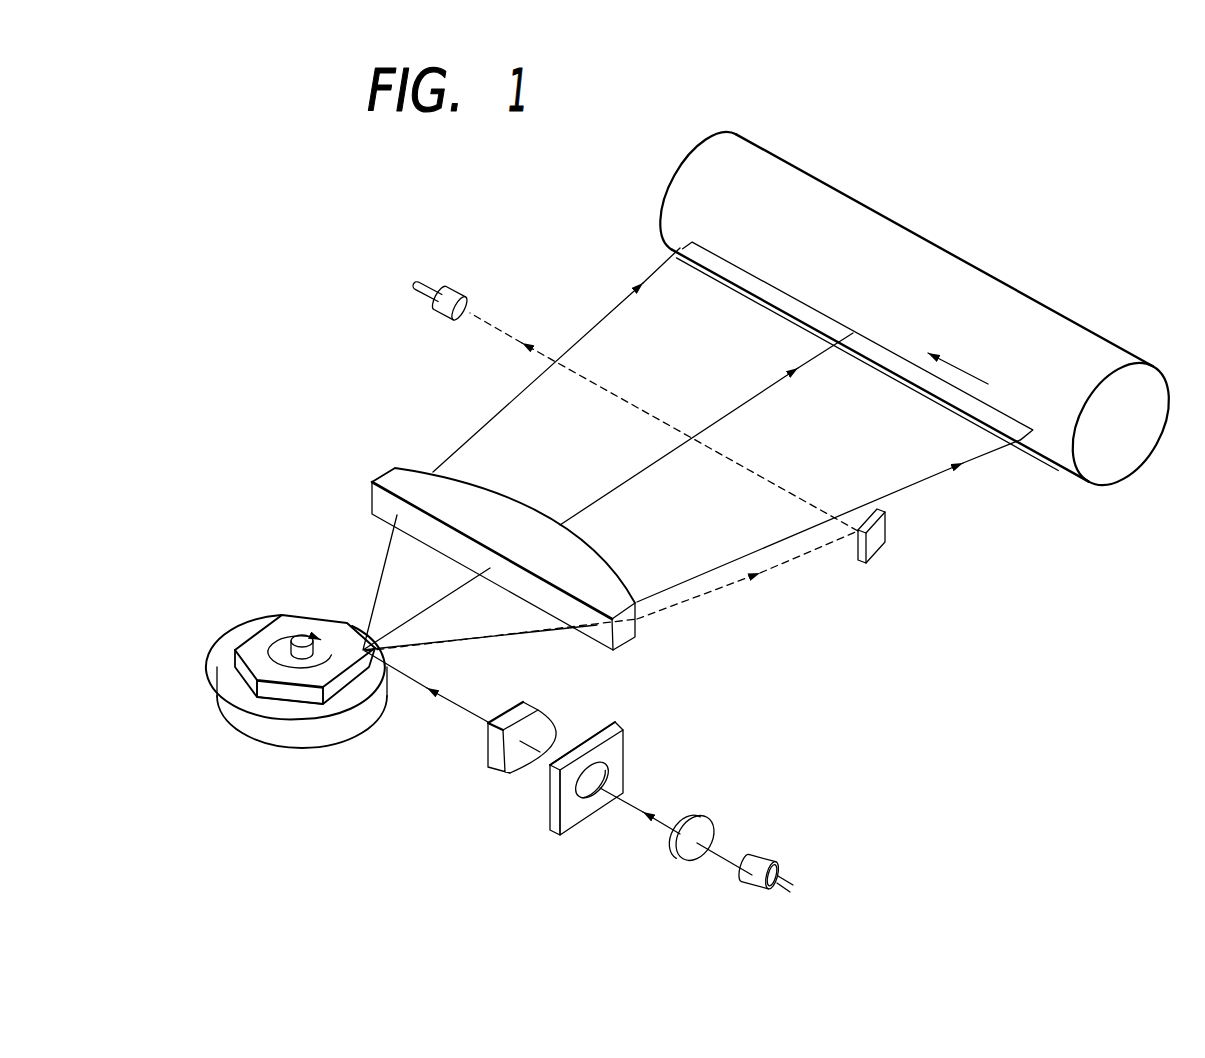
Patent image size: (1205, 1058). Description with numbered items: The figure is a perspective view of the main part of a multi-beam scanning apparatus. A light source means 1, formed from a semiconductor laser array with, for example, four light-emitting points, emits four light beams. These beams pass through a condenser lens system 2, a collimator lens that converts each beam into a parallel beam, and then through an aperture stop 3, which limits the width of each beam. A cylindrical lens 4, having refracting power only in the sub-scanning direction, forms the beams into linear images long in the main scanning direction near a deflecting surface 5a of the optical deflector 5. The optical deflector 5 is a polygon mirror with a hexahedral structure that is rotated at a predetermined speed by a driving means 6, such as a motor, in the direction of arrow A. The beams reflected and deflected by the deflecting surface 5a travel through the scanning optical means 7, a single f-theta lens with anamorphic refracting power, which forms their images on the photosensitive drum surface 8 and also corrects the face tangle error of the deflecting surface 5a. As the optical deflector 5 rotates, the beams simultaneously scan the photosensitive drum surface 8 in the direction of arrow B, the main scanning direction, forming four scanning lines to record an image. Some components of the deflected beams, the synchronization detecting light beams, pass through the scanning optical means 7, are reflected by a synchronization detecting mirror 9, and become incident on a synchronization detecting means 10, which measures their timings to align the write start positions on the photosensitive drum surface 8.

The light source means 1 is at (747, 881).
The condenser lens system 2 is at (687, 841).
The aperture stop 3 is at (563, 788).
The cylindrical lens 4 is at (490, 750).
The optical deflector 5 is at (263, 637).
The deflecting surface 5a is at (273, 693).
The driving means 6 is at (298, 740).
The scanning optical means 7 is at (390, 478).
The photosensitive drum surface 8 is at (898, 228).
The synchronization detecting mirror 9 is at (878, 538).
The synchronization detecting means 10 is at (455, 295).